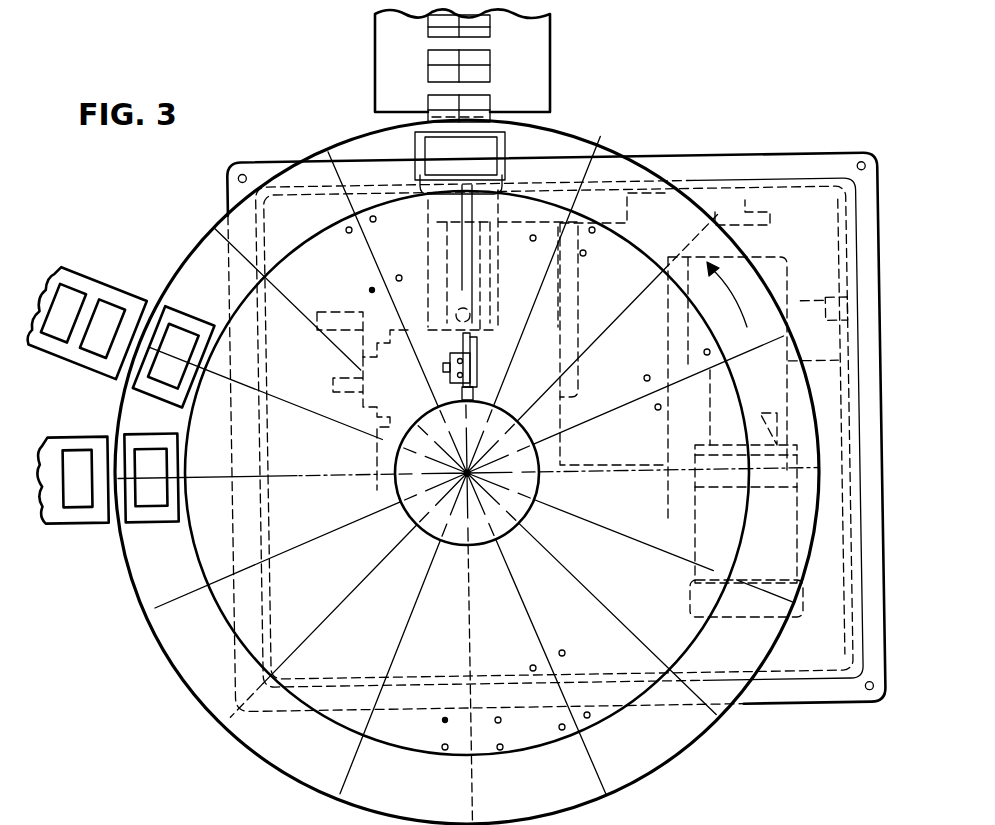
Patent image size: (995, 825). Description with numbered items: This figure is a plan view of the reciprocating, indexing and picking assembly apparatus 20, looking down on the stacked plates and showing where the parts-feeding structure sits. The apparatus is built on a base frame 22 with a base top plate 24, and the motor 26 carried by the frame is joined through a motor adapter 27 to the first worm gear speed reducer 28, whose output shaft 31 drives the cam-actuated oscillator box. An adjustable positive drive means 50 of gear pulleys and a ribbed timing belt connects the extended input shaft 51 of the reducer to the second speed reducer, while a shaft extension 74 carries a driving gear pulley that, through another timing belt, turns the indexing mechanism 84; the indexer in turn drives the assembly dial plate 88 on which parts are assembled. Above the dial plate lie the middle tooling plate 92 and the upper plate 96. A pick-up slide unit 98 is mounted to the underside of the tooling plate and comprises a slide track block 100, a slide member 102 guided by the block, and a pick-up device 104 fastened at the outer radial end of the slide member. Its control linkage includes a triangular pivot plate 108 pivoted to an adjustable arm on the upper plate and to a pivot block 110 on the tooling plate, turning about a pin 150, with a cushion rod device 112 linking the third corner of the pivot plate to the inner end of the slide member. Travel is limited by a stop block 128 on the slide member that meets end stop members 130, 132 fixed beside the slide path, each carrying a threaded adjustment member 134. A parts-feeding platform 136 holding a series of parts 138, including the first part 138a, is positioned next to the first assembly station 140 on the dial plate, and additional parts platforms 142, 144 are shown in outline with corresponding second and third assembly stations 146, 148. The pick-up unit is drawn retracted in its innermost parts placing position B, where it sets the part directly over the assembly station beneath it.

The assembly apparatus 20 is at (665, 100).
The base frame 22 is at (852, 250).
The base top plate 24 is at (838, 146).
The motor 26 is at (882, 539).
The motor adapter 27 is at (866, 412).
The first worm gear speed reducer 28 is at (846, 362).
The output shaft 31 is at (852, 290).
The adjustable positive drive means 50 is at (720, 212).
The extended input shaft 51 is at (760, 170).
The shaft extension 74 is at (332, 312).
The indexing mechanism 84 is at (457, 577).
The assembly dial plate 88 is at (415, 793).
The middle tooling plate 92 is at (430, 735).
The upper plate 96 is at (467, 527).
The pick-up slide unit 98 is at (431, 238).
The slide track block 100 is at (438, 306).
The slide member 102 is at (433, 280).
The pick-up device 104 is at (394, 258).
The pivot plate 108 is at (708, 367).
The pivot block 110 is at (455, 383).
The cushion rod device 112 is at (456, 325).
The stop block 128 is at (493, 288).
The end stop member 130 is at (500, 187).
The end stop member 132 is at (570, 296).
The threaded adjustment member 134 is at (593, 318).
The parts-feeding platform 136 is at (383, 45).
The parts 138 is at (492, 57).
The first part 138a is at (492, 100).
The first assembly station 140 is at (510, 135).
The additional parts platform 142 is at (62, 272).
The additional parts platform 144 is at (73, 523).
The second assembly station 146 is at (170, 290).
The third assembly station 148 is at (147, 522).
The pin 150 is at (477, 362).
The parts placing position B is at (566, 172).